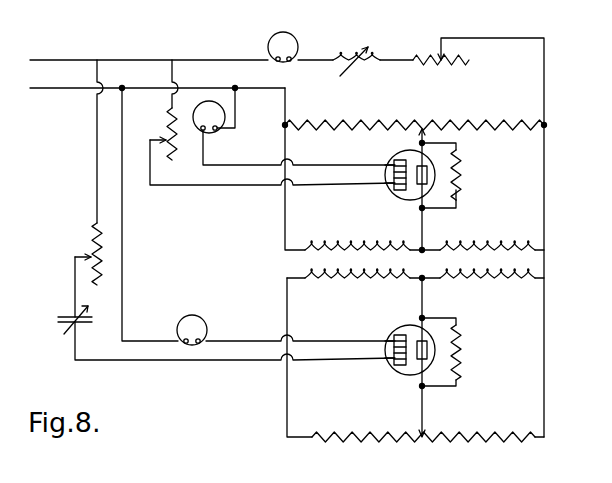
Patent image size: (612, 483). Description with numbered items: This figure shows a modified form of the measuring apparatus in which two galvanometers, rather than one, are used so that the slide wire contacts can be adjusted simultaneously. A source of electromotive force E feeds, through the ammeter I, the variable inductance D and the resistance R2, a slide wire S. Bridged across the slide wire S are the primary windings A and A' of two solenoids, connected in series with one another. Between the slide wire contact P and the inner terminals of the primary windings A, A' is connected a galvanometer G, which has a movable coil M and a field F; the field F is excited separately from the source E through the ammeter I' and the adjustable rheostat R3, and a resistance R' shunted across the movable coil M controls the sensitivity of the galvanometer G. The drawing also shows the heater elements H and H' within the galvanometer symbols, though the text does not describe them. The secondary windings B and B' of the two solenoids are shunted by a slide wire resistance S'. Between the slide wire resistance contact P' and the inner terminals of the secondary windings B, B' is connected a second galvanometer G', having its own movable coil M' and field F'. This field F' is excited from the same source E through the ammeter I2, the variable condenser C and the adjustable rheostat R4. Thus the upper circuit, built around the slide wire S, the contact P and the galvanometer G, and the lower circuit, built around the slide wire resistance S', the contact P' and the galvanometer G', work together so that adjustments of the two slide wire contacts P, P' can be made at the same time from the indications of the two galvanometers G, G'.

The source of electromotive force E is at (221, 74).
The ammeter I is at (293, 47).
The variable inductance D is at (356, 52).
The resistance R2 is at (458, 64).
The adjustable rheostat R3 is at (166, 114).
The ammeter I' is at (217, 125).
The slide wire S is at (414, 109).
The slide wire contact P is at (411, 168).
The galvanometer G is at (459, 174).
The movable coil M is at (461, 176).
The resistance R' is at (484, 204).
The field F is at (374, 185).
The heater H is at (378, 194).
The primary winding A is at (357, 234).
The primary winding A' is at (487, 234).
The adjustable rheostat R4 is at (92, 237).
The variable condenser C is at (67, 315).
The ammeter I2 is at (201, 322).
The secondary winding B is at (357, 290).
The secondary winding B' is at (487, 290).
The galvanometer G' is at (465, 348).
The movable coil M' is at (467, 350).
The field F' is at (378, 360).
The heater H' is at (383, 372).
The slide wire resistance contact P' is at (465, 357).
The slide wire resistance S' is at (423, 454).